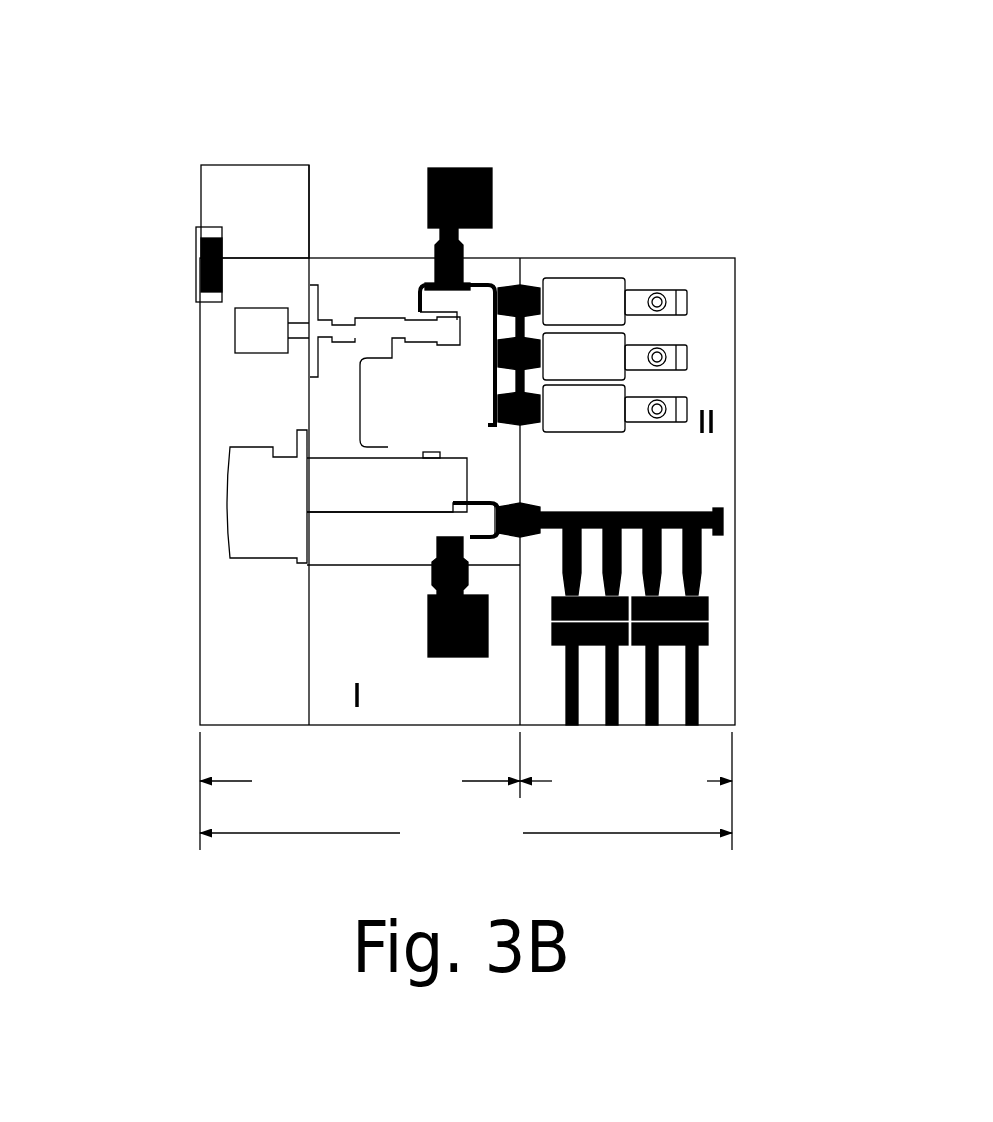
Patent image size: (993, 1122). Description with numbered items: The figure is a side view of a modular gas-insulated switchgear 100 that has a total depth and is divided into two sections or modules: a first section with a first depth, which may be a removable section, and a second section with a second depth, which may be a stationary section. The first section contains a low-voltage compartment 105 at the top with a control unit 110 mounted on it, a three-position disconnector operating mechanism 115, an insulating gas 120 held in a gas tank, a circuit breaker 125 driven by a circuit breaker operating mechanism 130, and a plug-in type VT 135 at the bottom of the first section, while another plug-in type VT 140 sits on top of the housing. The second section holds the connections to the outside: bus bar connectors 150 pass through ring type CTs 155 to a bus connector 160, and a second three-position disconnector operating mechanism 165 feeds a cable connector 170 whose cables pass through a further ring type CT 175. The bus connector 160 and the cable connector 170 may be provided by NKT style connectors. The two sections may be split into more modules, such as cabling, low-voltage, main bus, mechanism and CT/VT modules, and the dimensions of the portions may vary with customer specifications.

The switchgear 100 is at (285, 90).
The low-voltage compartment 105 is at (213, 176).
The control unit 110 is at (197, 265).
The three-position disconnector operating mechanism 115 is at (245, 323).
The insulating gas 120 is at (335, 405).
The circuit breaker 125 is at (347, 484).
The circuit breaker operating mechanism 130 is at (252, 528).
The plug-in type VT 135 is at (440, 640).
The plug-in type VT 140 is at (493, 165).
The bus bar connectors 150 is at (532, 288).
The ring type CT 155 is at (600, 277).
The bus connector 160 is at (687, 357).
The three-position disconnector operating mechanism 165 is at (385, 335).
The cable connector 170 is at (703, 557).
The ring type CT 175 is at (712, 634).